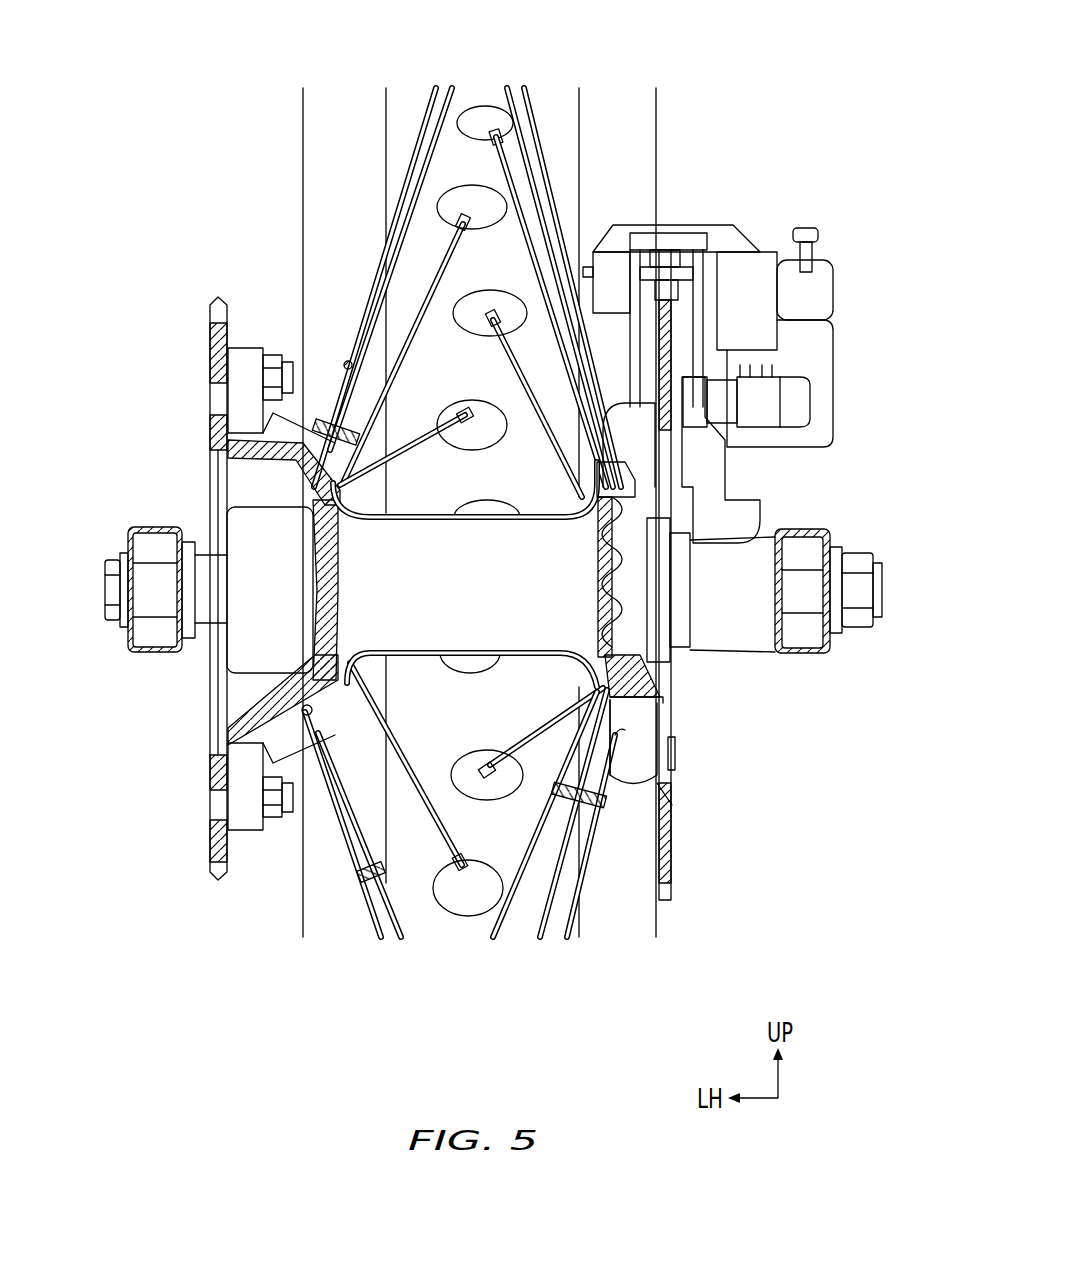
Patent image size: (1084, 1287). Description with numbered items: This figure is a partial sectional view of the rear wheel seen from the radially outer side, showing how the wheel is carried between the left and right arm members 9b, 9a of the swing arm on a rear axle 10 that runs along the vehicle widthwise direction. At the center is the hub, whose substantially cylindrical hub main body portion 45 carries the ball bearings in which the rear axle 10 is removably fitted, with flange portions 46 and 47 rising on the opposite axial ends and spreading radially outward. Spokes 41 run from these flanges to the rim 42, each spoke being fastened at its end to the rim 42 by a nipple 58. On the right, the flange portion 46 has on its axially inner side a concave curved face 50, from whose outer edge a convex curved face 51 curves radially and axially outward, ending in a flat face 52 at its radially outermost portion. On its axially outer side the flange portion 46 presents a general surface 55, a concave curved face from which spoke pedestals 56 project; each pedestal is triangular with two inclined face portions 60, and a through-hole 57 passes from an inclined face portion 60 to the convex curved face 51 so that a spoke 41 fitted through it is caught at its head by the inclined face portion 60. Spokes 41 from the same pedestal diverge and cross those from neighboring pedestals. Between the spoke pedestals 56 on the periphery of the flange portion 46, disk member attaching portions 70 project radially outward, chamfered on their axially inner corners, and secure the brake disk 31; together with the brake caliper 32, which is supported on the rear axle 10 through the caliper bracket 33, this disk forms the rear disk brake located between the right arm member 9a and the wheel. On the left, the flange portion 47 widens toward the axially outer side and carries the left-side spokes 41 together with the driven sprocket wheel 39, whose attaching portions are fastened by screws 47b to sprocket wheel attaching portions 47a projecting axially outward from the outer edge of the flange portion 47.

The rim 42 is at (412, 118).
The nipple 58 is at (490, 110).
The spoke 41 is at (567, 200).
The brake caliper 32 is at (745, 228).
The driven sprocket wheel 39 is at (220, 297).
The flange portion 47 is at (284, 607).
The sprocket wheel attaching portion 47a is at (245, 350).
The screw 47b is at (293, 378).
The left arm member 9b is at (152, 527).
The right arm member 9a is at (815, 660).
The rear axle 10 is at (115, 622).
The hub main body portion 45 is at (426, 652).
The general surface 55 is at (600, 530).
The concave curved face 50 is at (560, 655).
The through-hole 57 is at (620, 487).
The disk member attaching portion 70 is at (620, 390).
The inclined face portion 60 is at (620, 568).
The spoke pedestal 56 is at (633, 580).
The caliper bracket 33 is at (717, 477).
The brake disk 31 is at (672, 868).
The convex curved face 51 is at (672, 805).
The flange portion 46 is at (632, 783).
The flat face 52 is at (620, 770).